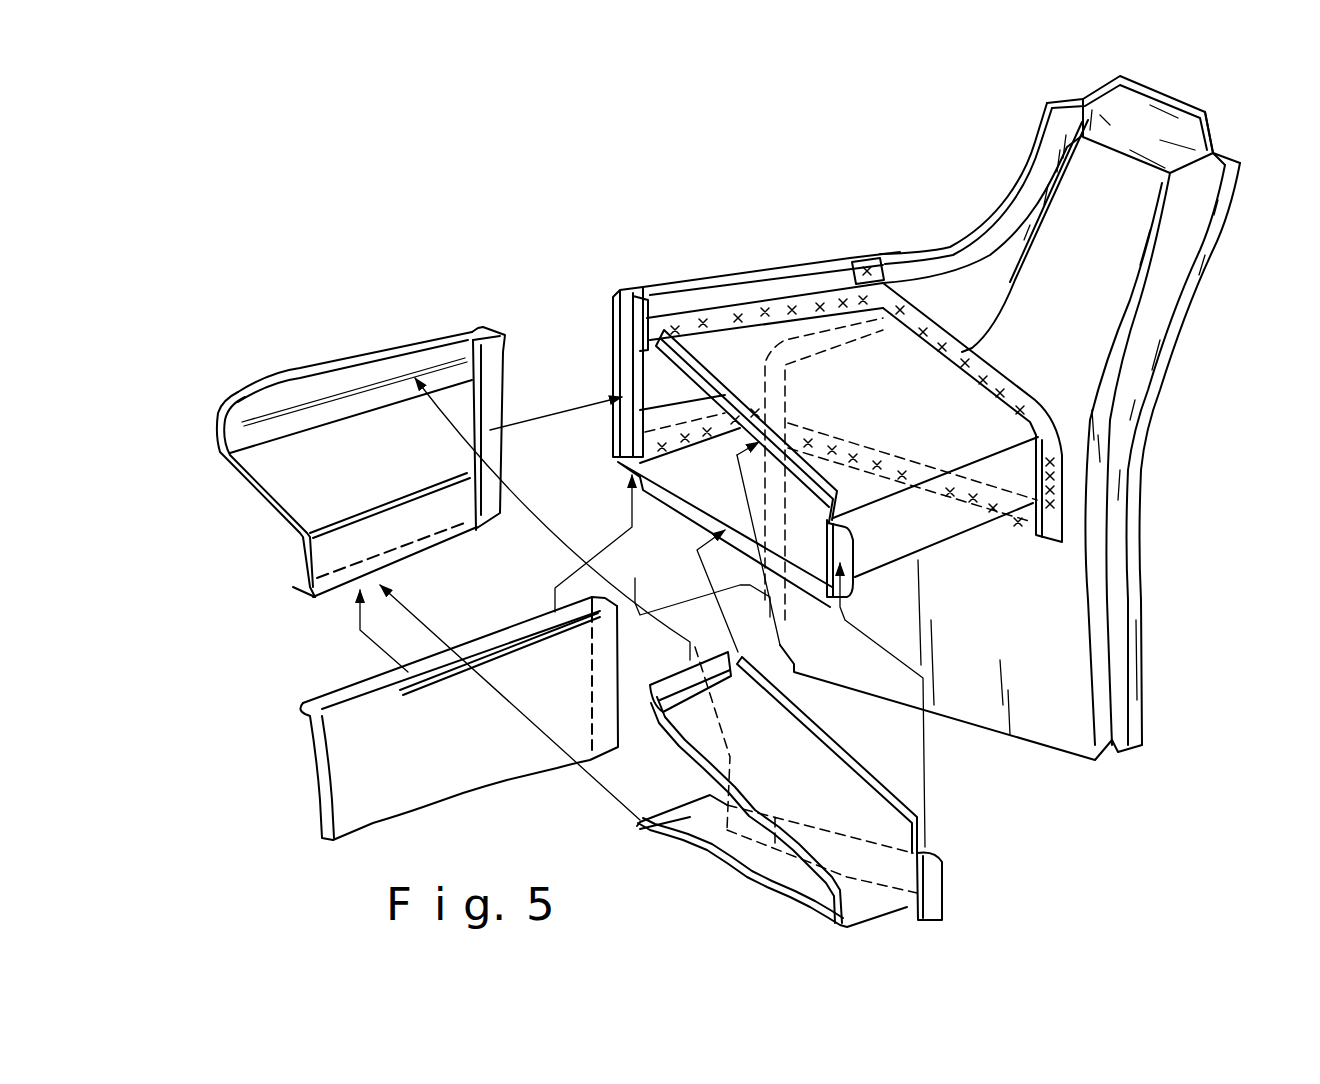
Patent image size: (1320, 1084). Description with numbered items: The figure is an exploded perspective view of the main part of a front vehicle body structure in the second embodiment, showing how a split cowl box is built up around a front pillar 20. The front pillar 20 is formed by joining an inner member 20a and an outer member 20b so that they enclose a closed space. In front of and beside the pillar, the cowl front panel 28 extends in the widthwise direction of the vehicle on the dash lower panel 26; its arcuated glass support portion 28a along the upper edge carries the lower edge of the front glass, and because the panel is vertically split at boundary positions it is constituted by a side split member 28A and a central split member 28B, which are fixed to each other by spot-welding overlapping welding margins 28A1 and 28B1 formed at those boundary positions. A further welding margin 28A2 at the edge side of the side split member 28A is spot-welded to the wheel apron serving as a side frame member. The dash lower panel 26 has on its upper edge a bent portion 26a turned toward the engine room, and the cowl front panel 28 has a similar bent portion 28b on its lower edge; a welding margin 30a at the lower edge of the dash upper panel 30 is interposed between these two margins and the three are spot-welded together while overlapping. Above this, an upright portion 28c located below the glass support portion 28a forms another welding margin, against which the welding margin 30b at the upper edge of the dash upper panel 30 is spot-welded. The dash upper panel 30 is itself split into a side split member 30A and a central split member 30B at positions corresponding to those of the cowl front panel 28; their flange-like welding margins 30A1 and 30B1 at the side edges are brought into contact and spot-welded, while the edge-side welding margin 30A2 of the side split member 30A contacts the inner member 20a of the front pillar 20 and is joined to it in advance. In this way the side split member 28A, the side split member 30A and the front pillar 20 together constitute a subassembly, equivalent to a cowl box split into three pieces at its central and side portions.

The front pillar 20 is at (1107, 253).
The inner member 20a is at (1080, 183).
The outer member 20b is at (1177, 102).
The cowl front panel 28 is at (677, 277).
The glass support portion 28a is at (325, 378).
The bent portion 28b is at (297, 585).
The upright portion 28c is at (230, 437).
The side split member 28A is at (637, 367).
The welding margin 28A1 is at (615, 297).
The welding margin 28A2 is at (859, 262).
The central split member 28B is at (470, 408).
The welding margin 28B1 is at (493, 328).
The dash lower panel 26 is at (358, 752).
The bent portion 26a is at (503, 627).
The dash upper panel 30 is at (950, 895).
The welding margin 30a is at (622, 470).
The welding margin 30b is at (670, 682).
The side split member 30A is at (928, 518).
The welding margin 30A1 is at (737, 455).
The welding margin 30A2 is at (1000, 373).
The central split member 30B is at (857, 815).
The welding margin 30B1 is at (818, 738).